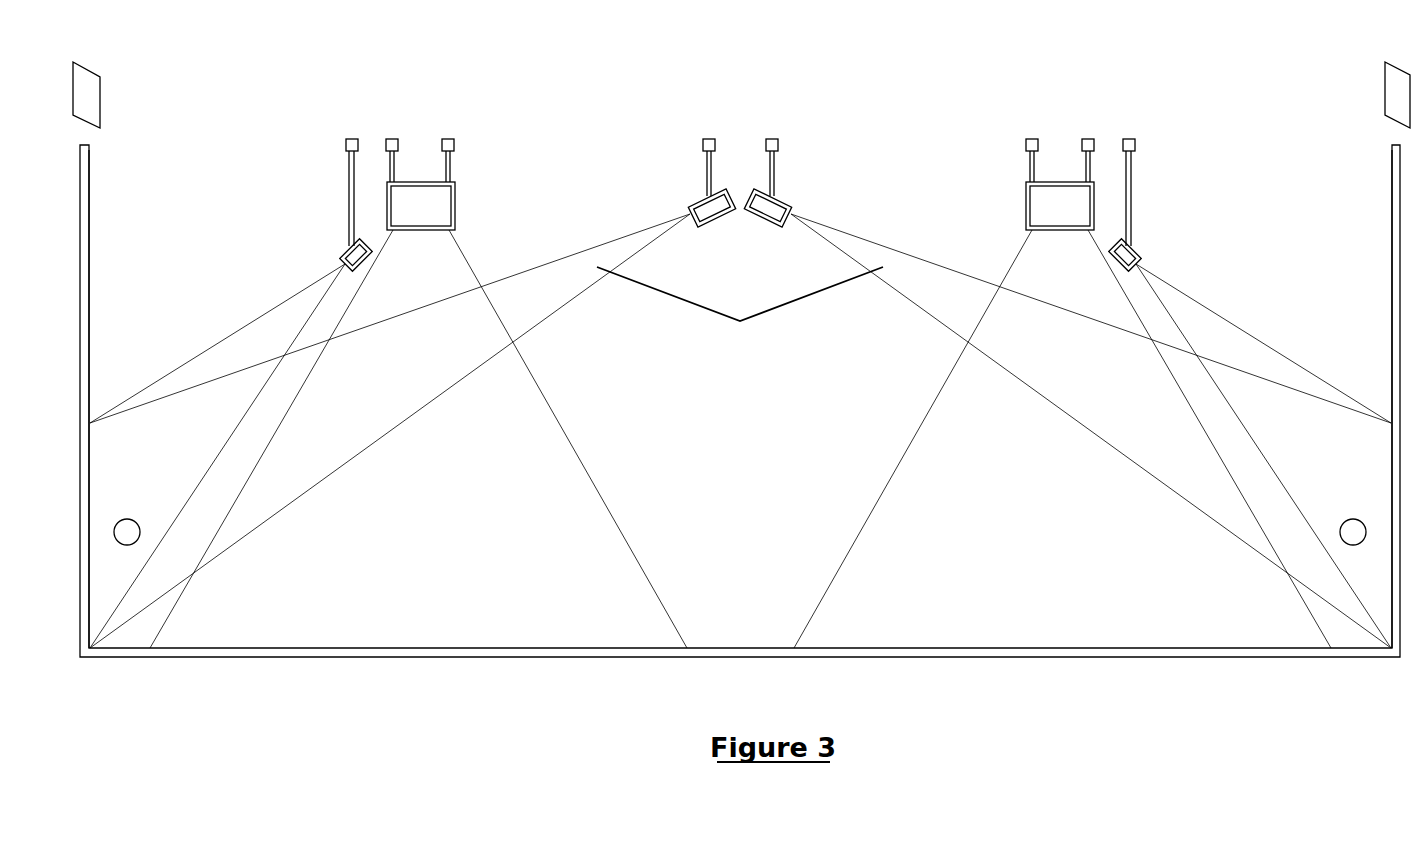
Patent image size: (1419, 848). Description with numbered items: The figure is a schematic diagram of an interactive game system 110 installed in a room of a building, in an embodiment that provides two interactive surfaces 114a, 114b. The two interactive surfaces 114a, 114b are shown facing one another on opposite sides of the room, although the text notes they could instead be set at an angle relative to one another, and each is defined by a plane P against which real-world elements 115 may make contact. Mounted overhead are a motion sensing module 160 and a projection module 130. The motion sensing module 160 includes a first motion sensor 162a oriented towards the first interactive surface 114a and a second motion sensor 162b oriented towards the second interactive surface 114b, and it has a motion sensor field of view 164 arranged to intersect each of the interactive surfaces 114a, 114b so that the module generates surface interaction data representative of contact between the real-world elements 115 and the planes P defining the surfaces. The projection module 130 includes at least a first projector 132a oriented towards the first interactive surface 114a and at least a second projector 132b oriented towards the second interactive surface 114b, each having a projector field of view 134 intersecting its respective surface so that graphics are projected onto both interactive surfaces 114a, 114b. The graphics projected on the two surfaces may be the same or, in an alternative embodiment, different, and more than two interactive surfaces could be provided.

The interactive game system 110 is at (600, 95).
The first interactive surface 114a is at (1391, 480).
The second interactive surface 114b is at (90, 478).
The real-world elements 115 is at (135, 535).
The projection module 130 is at (345, 233).
The first projector 132a is at (1119, 268).
The second projector 132b is at (362, 268).
The projector field of view 134 is at (250, 338).
The motion sensing module 160 is at (723, 180).
The first motion sensor 162a is at (770, 212).
The second motion sensor 162b is at (710, 212).
The motion sensor field of view 164 is at (740, 309).